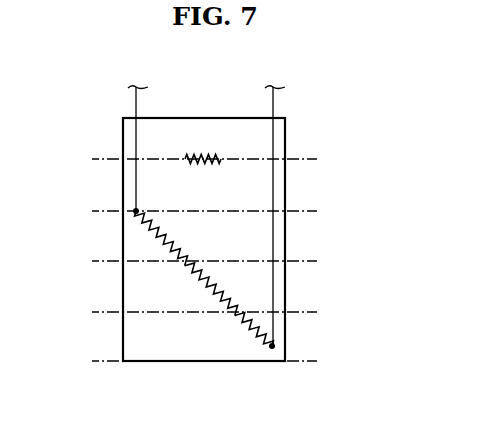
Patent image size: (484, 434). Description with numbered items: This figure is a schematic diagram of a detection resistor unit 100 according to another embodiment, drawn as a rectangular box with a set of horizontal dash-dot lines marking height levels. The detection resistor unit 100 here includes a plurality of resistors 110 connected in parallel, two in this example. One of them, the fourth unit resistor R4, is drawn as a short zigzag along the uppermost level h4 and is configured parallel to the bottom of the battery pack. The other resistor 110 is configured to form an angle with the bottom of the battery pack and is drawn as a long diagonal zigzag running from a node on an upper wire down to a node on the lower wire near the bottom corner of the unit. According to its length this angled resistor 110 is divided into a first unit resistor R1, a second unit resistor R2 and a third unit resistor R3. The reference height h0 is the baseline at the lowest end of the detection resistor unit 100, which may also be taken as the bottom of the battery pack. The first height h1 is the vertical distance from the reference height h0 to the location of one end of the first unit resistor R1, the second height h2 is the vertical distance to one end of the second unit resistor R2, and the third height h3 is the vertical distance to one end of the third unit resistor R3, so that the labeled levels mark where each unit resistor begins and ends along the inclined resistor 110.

The detection resistor unit 100 is at (229, 118).
The resistor 110 is at (200, 266).
The first unit resistor R1 is at (242, 329).
The second unit resistor R2 is at (204, 289).
The third unit resistor R3 is at (157, 238).
The fourth unit resistor R4 is at (203, 159).
The reference height h0 is at (217, 360).
The first height h1 is at (217, 311).
The second height h2 is at (217, 260).
The third height h3 is at (217, 210).
The height level h4 is at (217, 159).